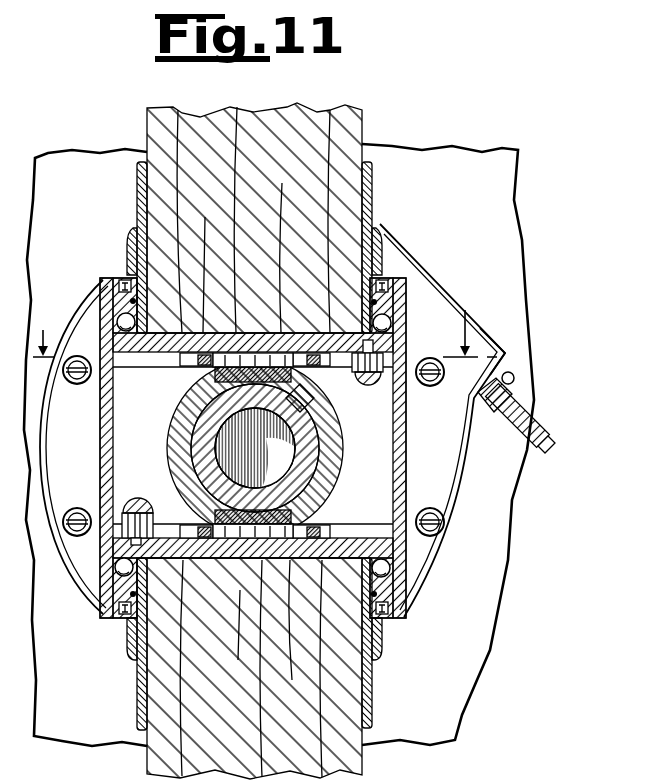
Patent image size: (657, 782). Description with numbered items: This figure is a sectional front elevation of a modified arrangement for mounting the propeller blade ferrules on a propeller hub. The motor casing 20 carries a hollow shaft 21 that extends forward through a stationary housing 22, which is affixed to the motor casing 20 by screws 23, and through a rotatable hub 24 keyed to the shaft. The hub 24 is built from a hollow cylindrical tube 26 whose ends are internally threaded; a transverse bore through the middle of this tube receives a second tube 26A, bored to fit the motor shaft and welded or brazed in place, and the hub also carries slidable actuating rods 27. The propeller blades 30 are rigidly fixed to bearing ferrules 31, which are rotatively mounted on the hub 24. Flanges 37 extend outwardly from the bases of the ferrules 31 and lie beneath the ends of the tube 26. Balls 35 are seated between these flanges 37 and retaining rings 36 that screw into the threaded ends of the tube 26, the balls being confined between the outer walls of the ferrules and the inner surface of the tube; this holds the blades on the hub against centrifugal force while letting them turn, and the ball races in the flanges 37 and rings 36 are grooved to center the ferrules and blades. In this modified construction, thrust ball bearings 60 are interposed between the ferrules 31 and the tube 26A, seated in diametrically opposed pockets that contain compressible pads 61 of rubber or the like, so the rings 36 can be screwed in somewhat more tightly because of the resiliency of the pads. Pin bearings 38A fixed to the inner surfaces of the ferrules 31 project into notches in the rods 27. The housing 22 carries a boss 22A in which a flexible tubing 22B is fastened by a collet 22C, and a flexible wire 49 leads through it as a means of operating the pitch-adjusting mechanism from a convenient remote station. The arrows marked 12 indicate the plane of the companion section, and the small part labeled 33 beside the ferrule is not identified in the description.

The section line 12 is at (265, 324).
The motor casing 20 is at (486, 634).
The hollow shaft 21 is at (296, 466).
The stationary housing 22 is at (70, 560).
The boss 22A is at (495, 352).
The flexible tubing 22B is at (532, 410).
The collet 22C is at (513, 378).
The screws 23 is at (77, 386).
The rotatable hub 24 is at (410, 459).
The hollow cylindrical tube 26 is at (402, 436).
The tube 26A is at (330, 473).
The slidable actuating rods 27 is at (126, 498).
The propeller blades 30 is at (366, 114).
The bearing ferrules 31 is at (373, 193).
The lip 33 is at (382, 656).
The balls 35 is at (117, 322).
The retaining rings 36 is at (390, 272).
The flanges 37 is at (380, 346).
The pin bearings 38A is at (165, 503).
The flexible wire 49 is at (550, 442).
The thrust ball bearings 60 is at (214, 367).
The compressible pads 61 is at (214, 387).